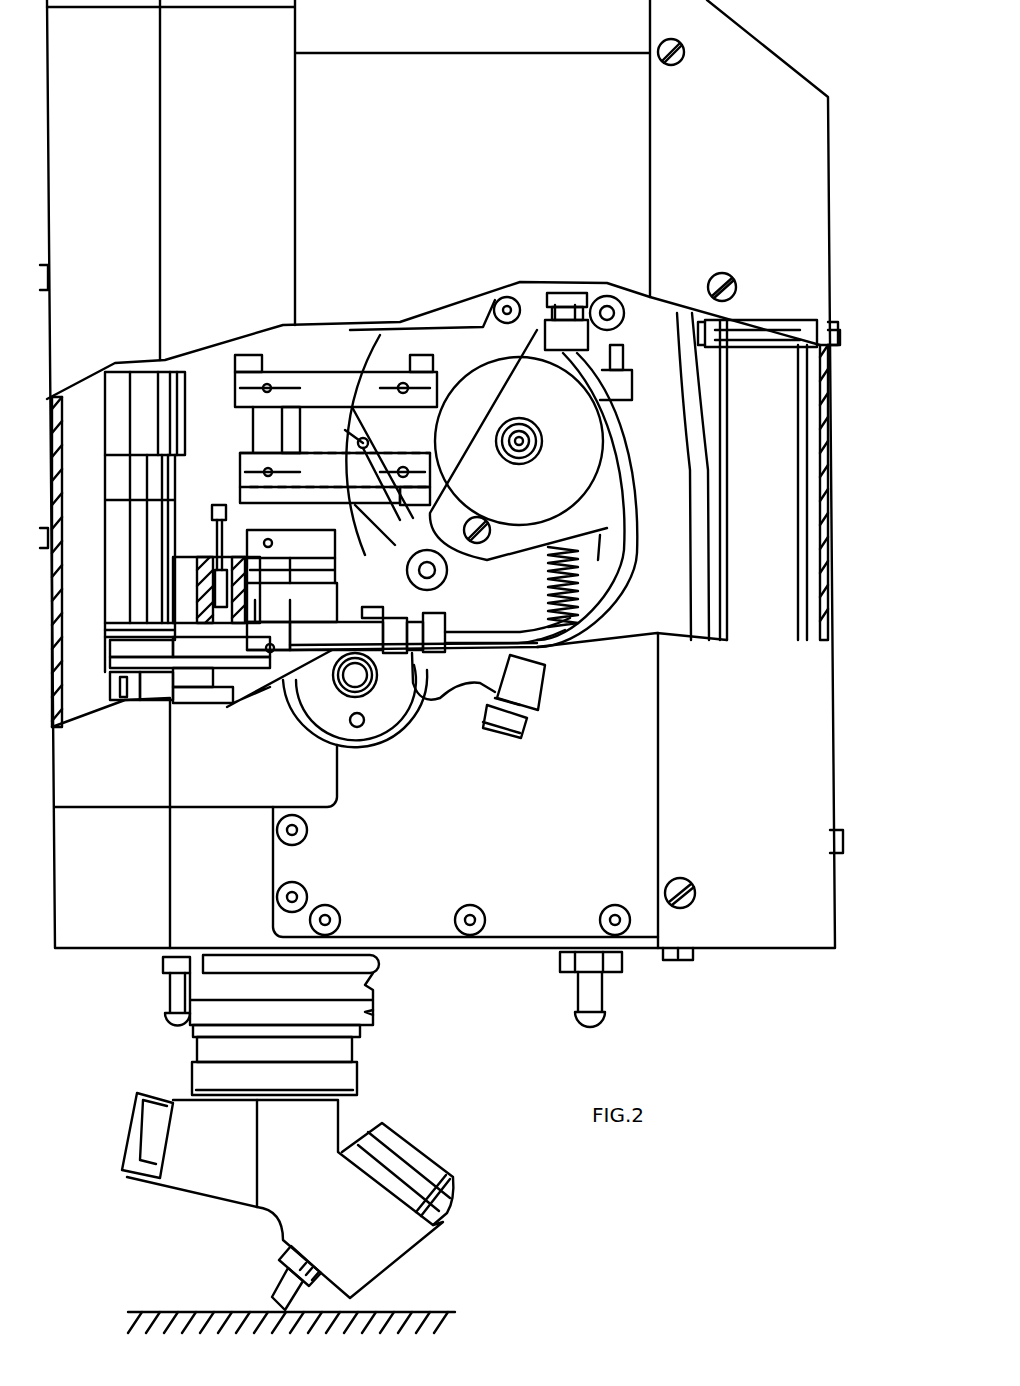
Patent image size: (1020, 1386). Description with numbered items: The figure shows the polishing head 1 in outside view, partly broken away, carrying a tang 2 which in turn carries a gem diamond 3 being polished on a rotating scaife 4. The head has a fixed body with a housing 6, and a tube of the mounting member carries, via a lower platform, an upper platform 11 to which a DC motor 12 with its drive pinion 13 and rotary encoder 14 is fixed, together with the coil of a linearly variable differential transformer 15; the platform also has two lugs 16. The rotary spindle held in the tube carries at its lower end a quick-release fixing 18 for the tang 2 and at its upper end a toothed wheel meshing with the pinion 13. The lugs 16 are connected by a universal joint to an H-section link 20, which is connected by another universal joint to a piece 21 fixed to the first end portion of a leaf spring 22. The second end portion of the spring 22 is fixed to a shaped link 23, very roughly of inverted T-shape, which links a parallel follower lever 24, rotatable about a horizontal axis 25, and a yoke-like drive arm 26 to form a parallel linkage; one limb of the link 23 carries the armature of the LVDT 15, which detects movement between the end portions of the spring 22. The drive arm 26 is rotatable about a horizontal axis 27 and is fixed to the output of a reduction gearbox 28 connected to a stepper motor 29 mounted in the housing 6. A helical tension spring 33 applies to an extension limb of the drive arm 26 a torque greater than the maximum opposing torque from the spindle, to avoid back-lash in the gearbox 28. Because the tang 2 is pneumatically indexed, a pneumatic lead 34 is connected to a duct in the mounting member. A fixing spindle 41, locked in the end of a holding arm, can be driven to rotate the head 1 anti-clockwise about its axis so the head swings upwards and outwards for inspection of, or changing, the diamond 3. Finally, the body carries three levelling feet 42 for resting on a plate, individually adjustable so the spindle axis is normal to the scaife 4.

The polishing head 1 is at (48, 659).
The tang 2 is at (338, 1112).
The gem diamond 3 is at (272, 1296).
The scaife 4 is at (205, 1312).
The housing 6 is at (745, 950).
The upper platform 11 is at (213, 665).
The DC motor 12 is at (124, 512).
The drive pinion 13 is at (122, 690).
The rotary encoder 14 is at (122, 418).
The linearly variable differential transformer (LVDT) 15 is at (203, 573).
The lugs 16 is at (257, 650).
The quick-release fixing 18 is at (360, 1070).
The H-section link 20 is at (305, 583).
The piece 21 is at (257, 533).
The leaf spring 22 is at (358, 502).
The shaped link 23 is at (257, 415).
The parallel follower lever 24 is at (342, 505).
The horizontal axis 25 is at (403, 470).
The drive arm 26 is at (382, 370).
The horizontal axis 27 is at (405, 386).
The reduction gearbox 28 is at (628, 425).
The stepper motor 29 is at (585, 458).
The helical tension spring 33 is at (548, 592).
The pneumatic lead 34 is at (615, 590).
The fixing spindle 41 is at (350, 678).
The levelling feet 42 is at (170, 1000).